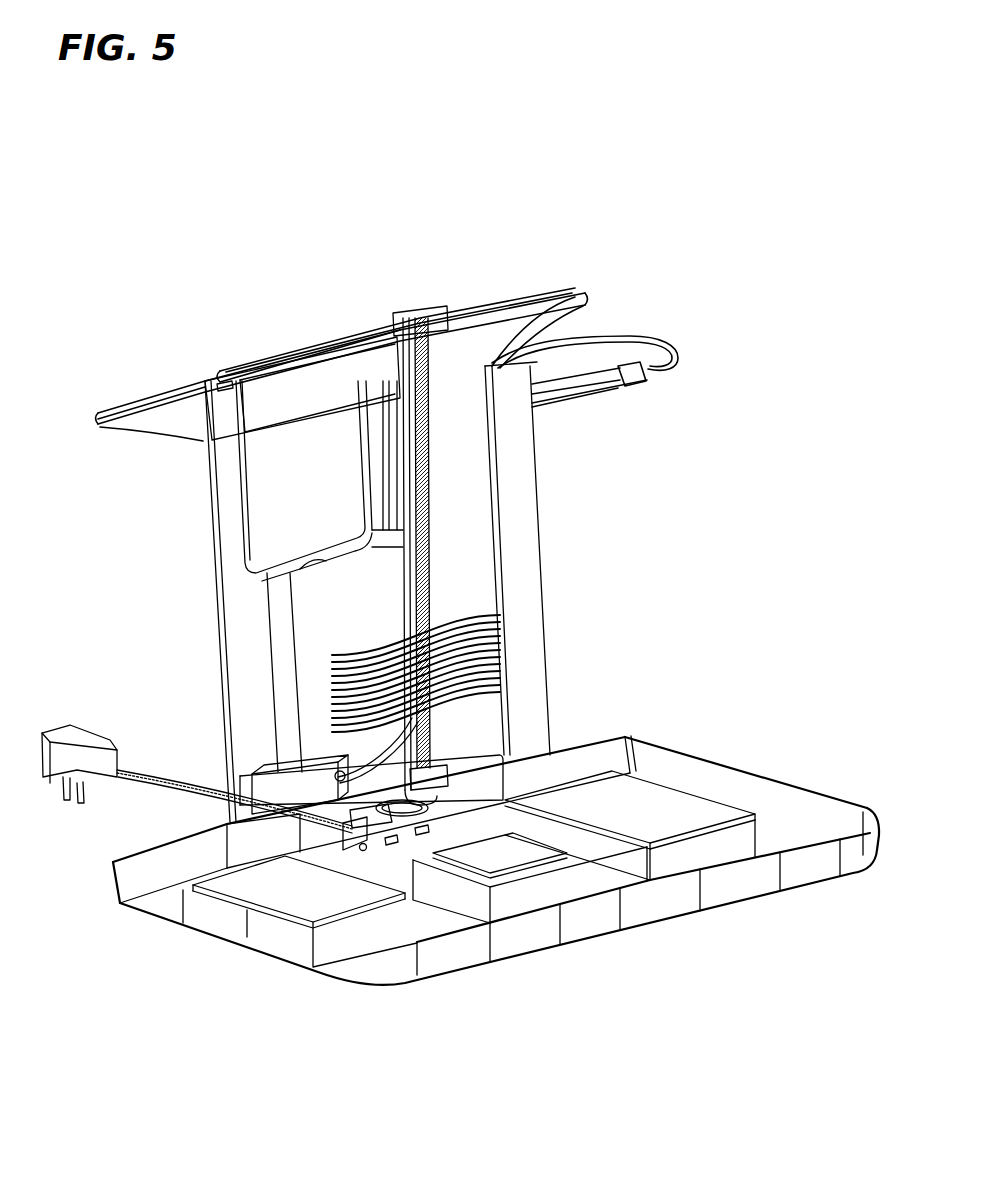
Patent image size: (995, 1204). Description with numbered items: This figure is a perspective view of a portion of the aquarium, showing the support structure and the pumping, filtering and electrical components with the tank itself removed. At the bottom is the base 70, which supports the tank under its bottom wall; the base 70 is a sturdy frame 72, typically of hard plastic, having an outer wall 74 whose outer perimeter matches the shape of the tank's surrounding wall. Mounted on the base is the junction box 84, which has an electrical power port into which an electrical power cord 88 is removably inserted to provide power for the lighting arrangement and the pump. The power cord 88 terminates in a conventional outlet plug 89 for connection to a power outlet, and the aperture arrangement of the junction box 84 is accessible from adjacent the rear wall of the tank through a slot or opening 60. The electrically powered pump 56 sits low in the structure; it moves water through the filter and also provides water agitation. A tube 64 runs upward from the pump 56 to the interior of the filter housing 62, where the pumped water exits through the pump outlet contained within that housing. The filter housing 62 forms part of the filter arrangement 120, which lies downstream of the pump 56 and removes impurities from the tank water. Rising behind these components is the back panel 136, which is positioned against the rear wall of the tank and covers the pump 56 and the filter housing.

The filter housing 62 is at (277, 475).
The filter arrangement 120 is at (257, 525).
The back panel 136 is at (533, 539).
The tube 64 is at (265, 650).
The outlet plug 89 is at (53, 742).
The electrical power cord 88 is at (150, 777).
The pump 56 is at (277, 770).
The frame 72 is at (715, 776).
The outer wall 74 is at (822, 806).
The base 70 is at (120, 885).
The slot or opening 60 is at (307, 847).
The junction box 84 is at (393, 860).